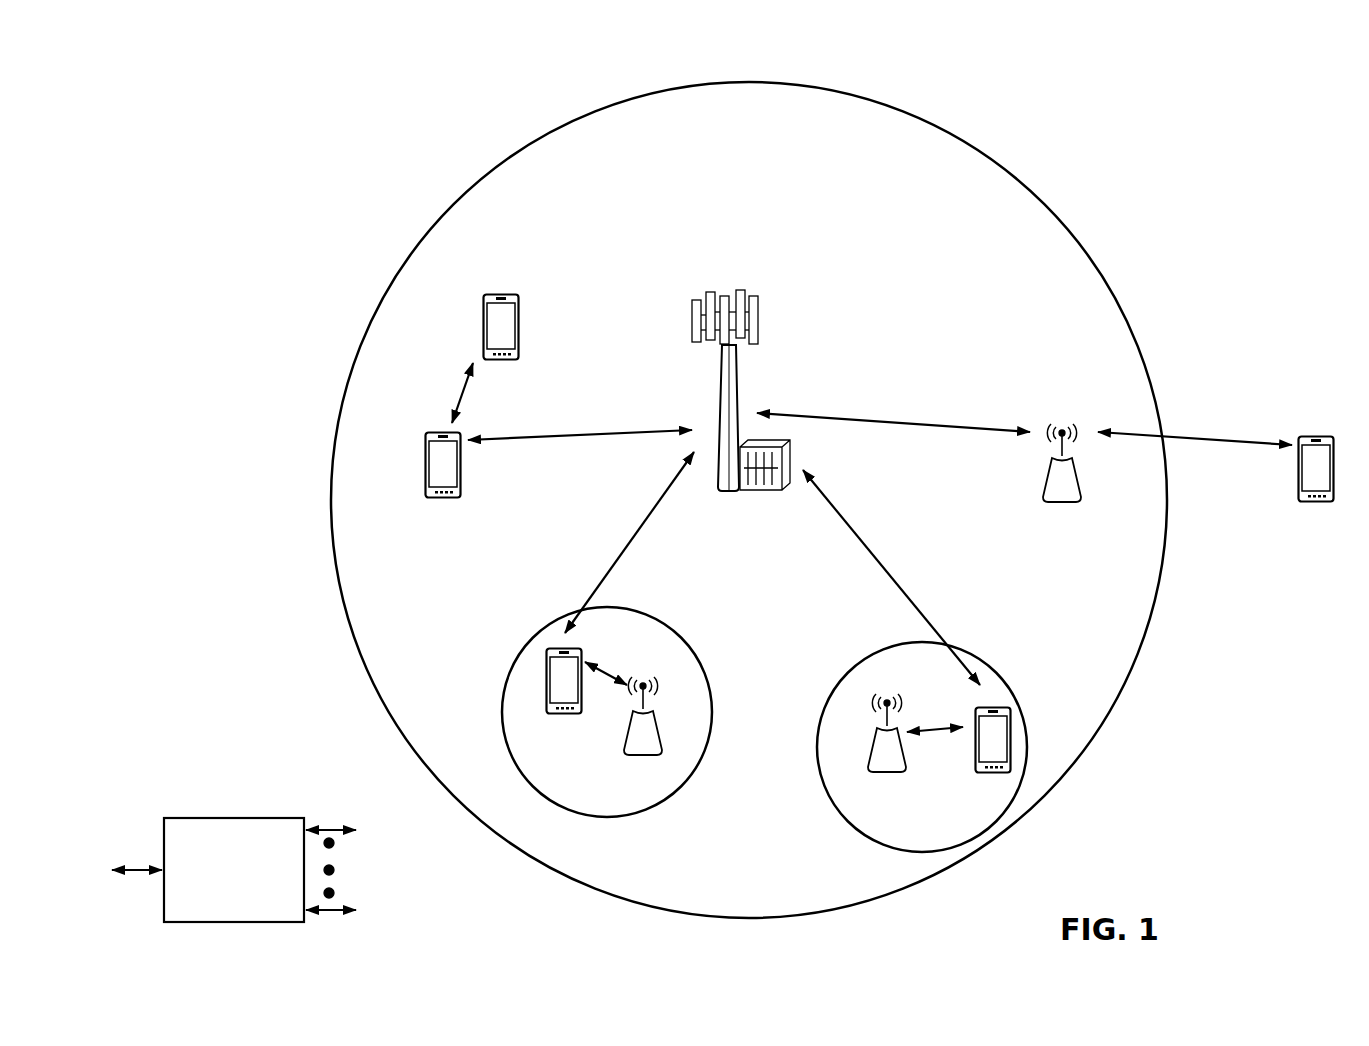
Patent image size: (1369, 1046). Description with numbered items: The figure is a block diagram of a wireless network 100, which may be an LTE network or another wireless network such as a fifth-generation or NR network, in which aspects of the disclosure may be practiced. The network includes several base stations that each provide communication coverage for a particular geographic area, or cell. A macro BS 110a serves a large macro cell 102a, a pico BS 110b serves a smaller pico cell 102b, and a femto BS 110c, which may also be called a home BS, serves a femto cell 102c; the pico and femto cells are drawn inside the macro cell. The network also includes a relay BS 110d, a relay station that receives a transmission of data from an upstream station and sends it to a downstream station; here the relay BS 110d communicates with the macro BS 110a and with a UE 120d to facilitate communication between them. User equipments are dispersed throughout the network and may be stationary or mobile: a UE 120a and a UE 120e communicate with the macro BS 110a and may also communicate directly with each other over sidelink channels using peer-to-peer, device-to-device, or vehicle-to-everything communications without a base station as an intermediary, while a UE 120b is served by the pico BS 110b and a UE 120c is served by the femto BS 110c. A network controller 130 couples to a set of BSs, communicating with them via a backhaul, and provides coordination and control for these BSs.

The wireless network 100 is at (216, 78).
The macro cell 102a is at (1026, 186).
The pico cell 102b is at (708, 648).
The femto cell 102c is at (858, 658).
The macro BS 110a is at (738, 279).
The pico BS 110b is at (666, 746).
The femto BS 110c is at (858, 761).
The relay BS 110d is at (1063, 425).
The UE 120a is at (424, 463).
The UE 120b is at (551, 715).
The UE 120c is at (976, 776).
The UE 120d is at (1324, 434).
The UE 120e is at (482, 318).
The network controller 130 is at (234, 818).